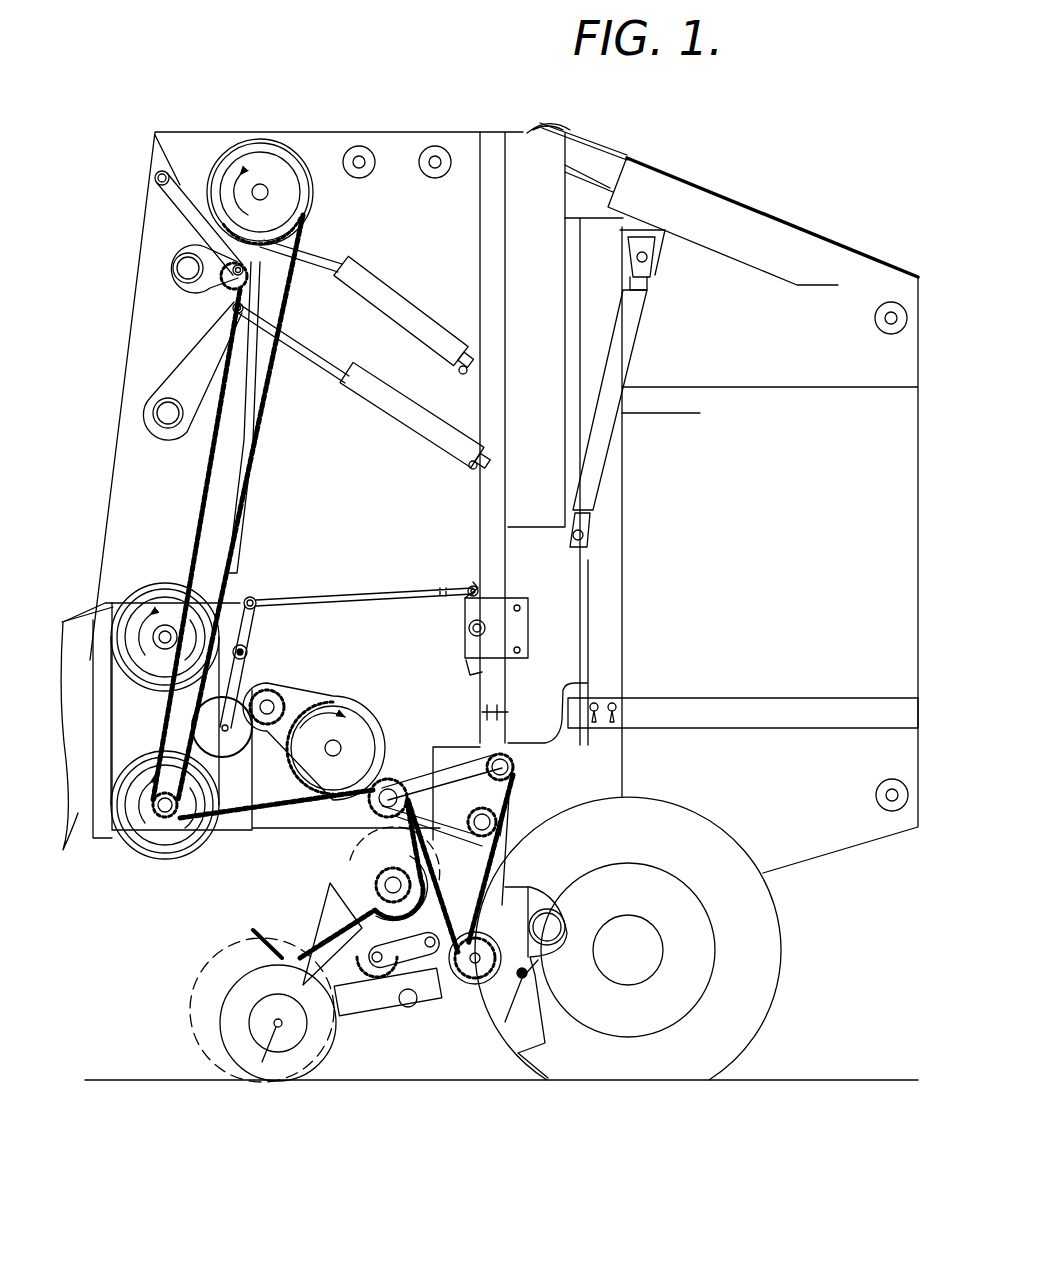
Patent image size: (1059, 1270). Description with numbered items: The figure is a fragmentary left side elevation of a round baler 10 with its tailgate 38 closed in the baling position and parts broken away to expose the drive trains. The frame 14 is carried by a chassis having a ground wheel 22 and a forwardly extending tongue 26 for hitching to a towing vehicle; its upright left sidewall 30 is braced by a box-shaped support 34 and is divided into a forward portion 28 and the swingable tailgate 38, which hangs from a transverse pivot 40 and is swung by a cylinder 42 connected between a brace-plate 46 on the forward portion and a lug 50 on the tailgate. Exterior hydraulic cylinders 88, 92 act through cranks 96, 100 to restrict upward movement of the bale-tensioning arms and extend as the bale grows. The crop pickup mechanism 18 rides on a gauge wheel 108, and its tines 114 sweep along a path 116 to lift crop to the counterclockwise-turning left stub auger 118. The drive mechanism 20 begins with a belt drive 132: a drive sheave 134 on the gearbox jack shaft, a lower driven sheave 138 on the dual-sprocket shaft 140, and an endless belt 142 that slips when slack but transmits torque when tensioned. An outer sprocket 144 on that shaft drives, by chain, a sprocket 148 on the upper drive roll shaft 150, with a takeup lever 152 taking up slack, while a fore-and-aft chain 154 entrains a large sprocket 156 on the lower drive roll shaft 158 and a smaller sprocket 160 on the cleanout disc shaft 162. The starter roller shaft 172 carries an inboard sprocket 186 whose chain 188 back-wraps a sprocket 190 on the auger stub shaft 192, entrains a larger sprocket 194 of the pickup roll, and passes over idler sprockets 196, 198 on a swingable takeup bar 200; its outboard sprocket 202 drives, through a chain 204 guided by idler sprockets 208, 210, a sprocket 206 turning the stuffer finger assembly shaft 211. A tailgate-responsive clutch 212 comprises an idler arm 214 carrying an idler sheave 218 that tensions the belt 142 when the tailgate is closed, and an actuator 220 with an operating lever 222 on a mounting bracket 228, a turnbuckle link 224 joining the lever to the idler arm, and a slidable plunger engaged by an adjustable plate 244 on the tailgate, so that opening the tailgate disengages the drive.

The round baler 10 is at (708, 165).
The frame 14 is at (840, 860).
The crop pickup mechanism 18 is at (218, 930).
The drive mechanism 20 is at (458, 748).
The ground wheel 22 is at (768, 1020).
The tongue 26 is at (78, 855).
The forward portion 28 is at (395, 130).
The left sidewall 30 is at (342, 481).
The support 34 is at (505, 500).
The tailgate 38 is at (845, 310).
The pivot 40 is at (548, 124).
The cylinder 42 is at (603, 430).
The brace-plate 46 is at (575, 585).
The lug 50 is at (652, 268).
The hydraulic cylinder 88 is at (410, 327).
The hydraulic cylinder 92 is at (372, 410).
The crank 96 is at (172, 290).
The crank 100 is at (165, 385).
The gauge wheel 108 is at (262, 1048).
The tines 114 is at (250, 950).
The path 116 is at (250, 1010).
The left stub auger 118 is at (355, 848).
The belt drive 132 is at (100, 660).
The drive sheave 134 is at (172, 615).
The driven sheave 138 is at (165, 845).
The dual-sprocket shaft 140 is at (140, 830).
The belt 142 is at (115, 748).
The outer sprocket 144 is at (195, 830).
The sprocket 148 is at (290, 168).
The shaft 150 is at (270, 193).
The takeup lever 152 is at (195, 205).
The chain 154 is at (315, 695).
The large sprocket 156 is at (355, 740).
The shaft 158 is at (330, 762).
The sprocket 160 is at (283, 695).
The shaft 162 is at (270, 698).
The starter roller shaft 172 is at (390, 778).
The inboard sprocket 186 is at (375, 812).
The chain 188 is at (310, 935).
The sprocket 190 is at (378, 880).
The stub shaft 192 is at (383, 887).
The sprocket 194 is at (372, 1010).
The idler sprocket 196 is at (395, 990).
The idler sprocket 198 is at (462, 935).
The takeup bar 200 is at (440, 985).
The outboard sprocket 202 is at (405, 795).
The chain 204 is at (500, 885).
The sprocket 206 is at (528, 973).
The idler sprocket 208 is at (496, 822).
The idler sprocket 210 is at (510, 775).
The stuffer finger assembly shaft 211 is at (493, 705).
The clutch 212 is at (265, 632).
The idler arm 214 is at (245, 598).
The idler sheave 218 is at (228, 757).
The actuator 220 is at (450, 620).
The operating lever 222 is at (470, 660).
The turnbuckle link 224 is at (362, 598).
The mounting bracket 228 is at (528, 628).
The plate 244 is at (600, 710).